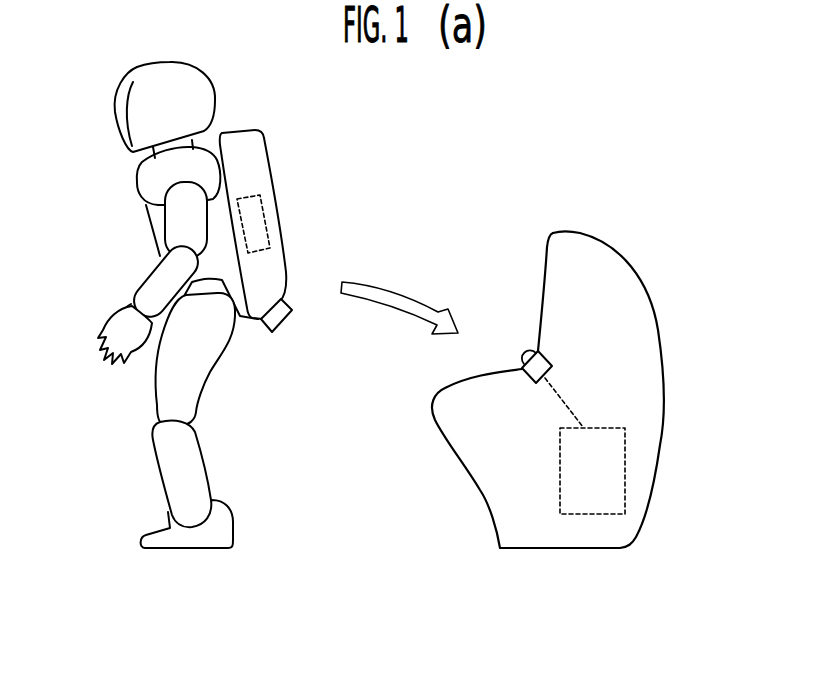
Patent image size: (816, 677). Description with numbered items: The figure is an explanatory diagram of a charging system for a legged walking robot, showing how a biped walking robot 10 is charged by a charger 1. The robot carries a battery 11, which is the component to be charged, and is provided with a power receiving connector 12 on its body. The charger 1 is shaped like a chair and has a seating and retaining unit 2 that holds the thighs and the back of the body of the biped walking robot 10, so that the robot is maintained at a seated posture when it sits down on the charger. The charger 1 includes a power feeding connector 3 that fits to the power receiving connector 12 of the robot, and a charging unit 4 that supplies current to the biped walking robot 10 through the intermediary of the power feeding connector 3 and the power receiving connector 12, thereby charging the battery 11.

The charger 1 is at (626, 216).
The seating and retaining unit 2 is at (543, 255).
The power feeding connector 3 is at (520, 351).
The charging unit 4 is at (626, 476).
The biped walking robot 10 is at (240, 84).
The battery 11 is at (266, 216).
The power receiving connector 12 is at (292, 314).